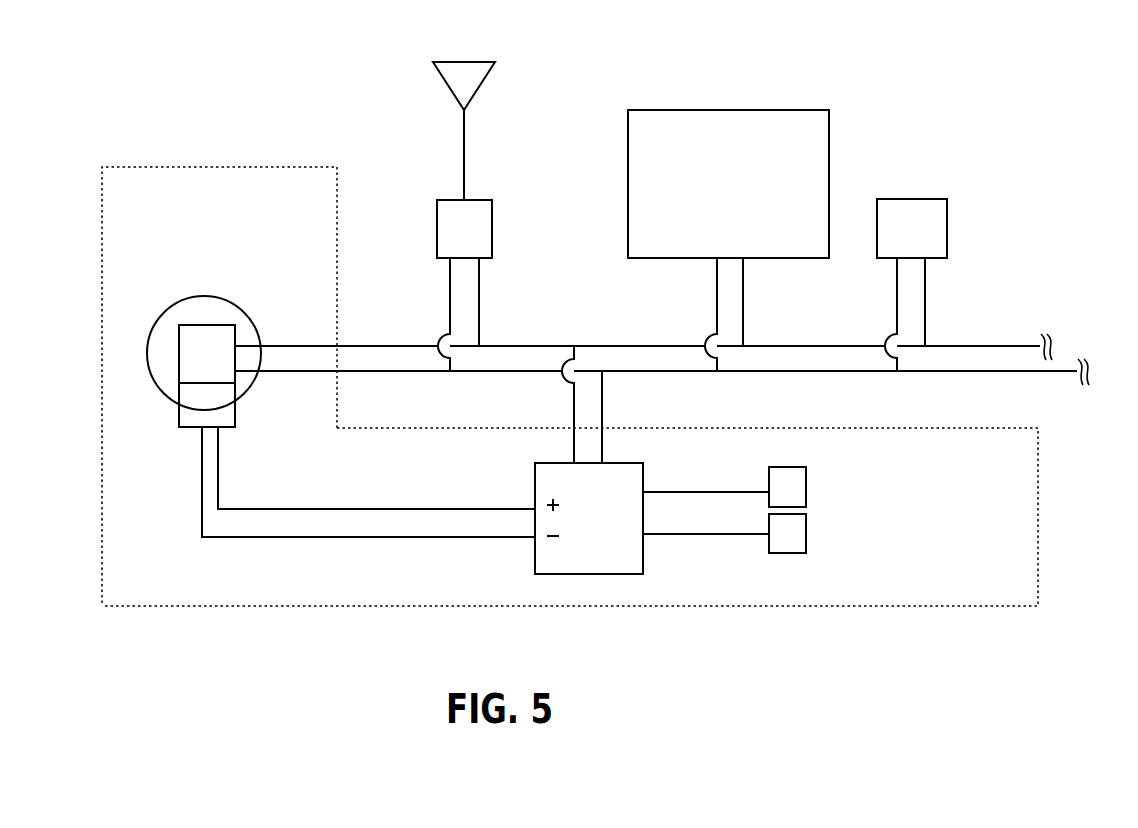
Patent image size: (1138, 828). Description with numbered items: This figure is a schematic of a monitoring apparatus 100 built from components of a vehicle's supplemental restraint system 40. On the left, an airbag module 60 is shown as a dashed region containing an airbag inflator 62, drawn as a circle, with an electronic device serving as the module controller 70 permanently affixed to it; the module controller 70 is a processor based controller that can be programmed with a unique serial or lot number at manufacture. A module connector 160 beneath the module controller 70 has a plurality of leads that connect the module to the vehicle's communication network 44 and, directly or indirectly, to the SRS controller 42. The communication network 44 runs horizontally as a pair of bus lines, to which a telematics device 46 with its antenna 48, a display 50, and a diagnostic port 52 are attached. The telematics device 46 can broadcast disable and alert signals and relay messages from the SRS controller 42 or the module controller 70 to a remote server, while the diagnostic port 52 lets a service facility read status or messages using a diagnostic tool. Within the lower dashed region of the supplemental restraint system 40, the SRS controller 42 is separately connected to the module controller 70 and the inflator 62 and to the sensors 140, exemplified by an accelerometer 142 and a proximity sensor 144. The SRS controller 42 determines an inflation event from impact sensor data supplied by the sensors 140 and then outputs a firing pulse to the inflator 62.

The monitoring apparatus 100 is at (962, 61).
The airbag module 60 is at (181, 225).
The supplemental restraint system 40 is at (1039, 517).
The airbag inflator 62 is at (222, 297).
The module controller 70 is at (179, 326).
The module connector 160 is at (178, 428).
The antenna 48 is at (496, 62).
The telematics device 46 is at (493, 200).
The display 50 is at (829, 110).
The diagnostic port 52 is at (947, 199).
The communication network 44 is at (535, 401).
The SRS controller 42 is at (641, 555).
The accelerometer 142 is at (806, 482).
The proximity sensor 144 is at (806, 530).
The sensors 140 is at (900, 472).